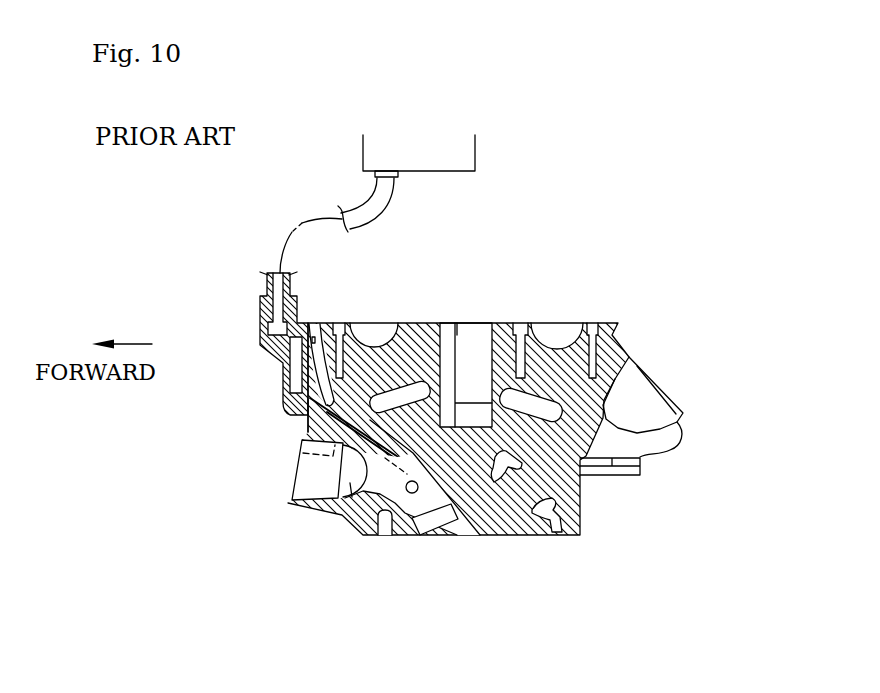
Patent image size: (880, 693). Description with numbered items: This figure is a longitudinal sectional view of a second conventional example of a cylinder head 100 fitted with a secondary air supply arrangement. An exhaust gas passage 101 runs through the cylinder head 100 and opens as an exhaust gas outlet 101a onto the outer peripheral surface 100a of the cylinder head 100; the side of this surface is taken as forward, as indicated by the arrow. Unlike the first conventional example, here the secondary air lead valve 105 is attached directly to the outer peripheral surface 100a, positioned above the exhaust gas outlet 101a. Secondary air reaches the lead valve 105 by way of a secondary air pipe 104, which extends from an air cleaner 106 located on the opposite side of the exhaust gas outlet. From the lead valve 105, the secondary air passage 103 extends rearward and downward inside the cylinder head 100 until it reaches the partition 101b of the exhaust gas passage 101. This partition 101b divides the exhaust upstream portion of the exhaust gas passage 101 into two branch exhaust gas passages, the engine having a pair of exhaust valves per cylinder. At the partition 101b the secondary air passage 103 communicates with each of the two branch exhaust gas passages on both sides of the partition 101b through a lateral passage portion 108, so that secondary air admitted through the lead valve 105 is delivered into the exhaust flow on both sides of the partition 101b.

The cylinder head 100 is at (587, 453).
The outer peripheral surface 100a is at (308, 418).
The exhaust gas passage 101 is at (343, 510).
The exhaust gas outlet 101a is at (303, 475).
The partition 101b is at (397, 515).
The secondary air passage 103 is at (352, 428).
The secondary air pipe 104 is at (365, 220).
The secondary air lead valve 105 is at (283, 375).
The air cleaner 106 is at (475, 158).
The lateral passage portion 108 is at (448, 532).